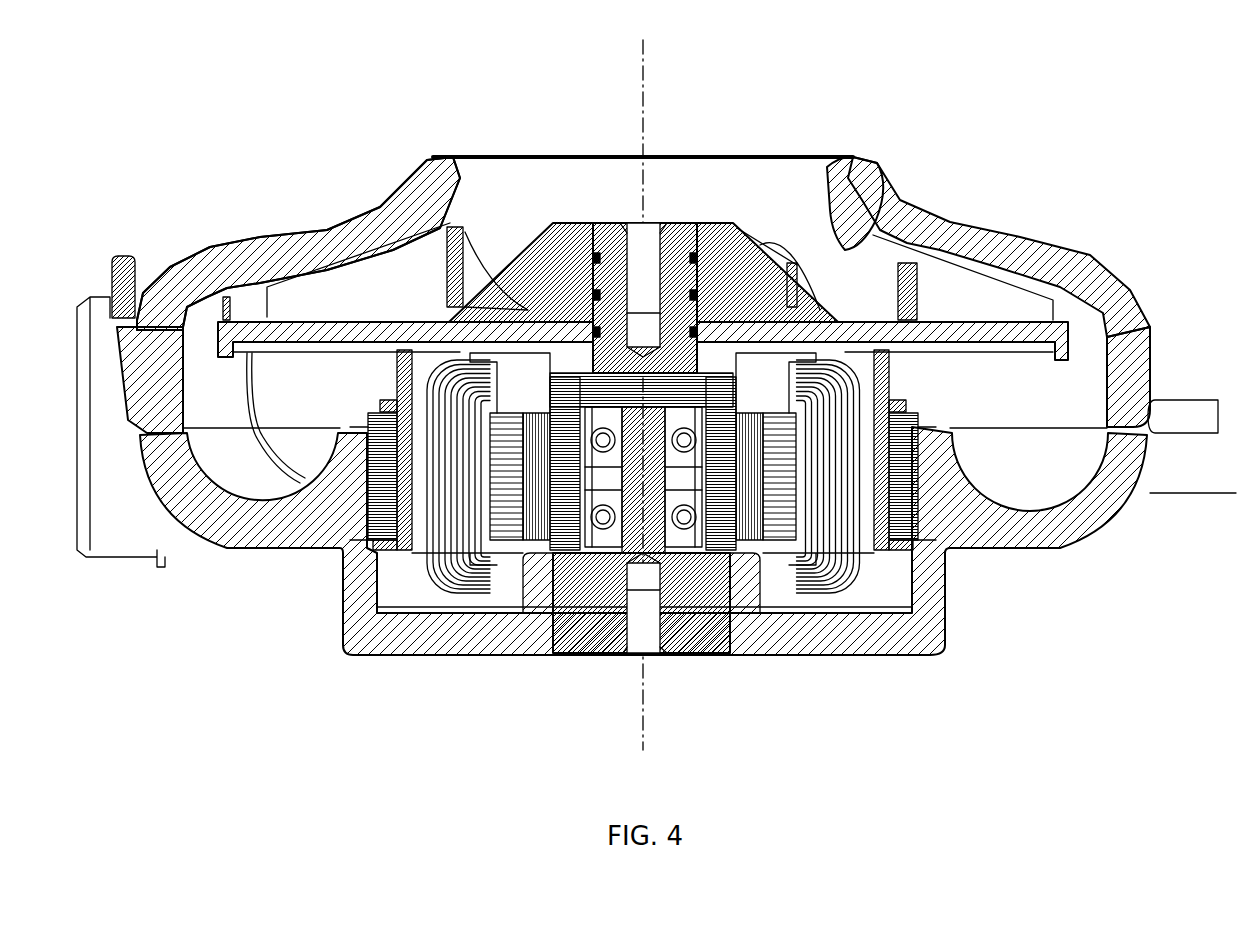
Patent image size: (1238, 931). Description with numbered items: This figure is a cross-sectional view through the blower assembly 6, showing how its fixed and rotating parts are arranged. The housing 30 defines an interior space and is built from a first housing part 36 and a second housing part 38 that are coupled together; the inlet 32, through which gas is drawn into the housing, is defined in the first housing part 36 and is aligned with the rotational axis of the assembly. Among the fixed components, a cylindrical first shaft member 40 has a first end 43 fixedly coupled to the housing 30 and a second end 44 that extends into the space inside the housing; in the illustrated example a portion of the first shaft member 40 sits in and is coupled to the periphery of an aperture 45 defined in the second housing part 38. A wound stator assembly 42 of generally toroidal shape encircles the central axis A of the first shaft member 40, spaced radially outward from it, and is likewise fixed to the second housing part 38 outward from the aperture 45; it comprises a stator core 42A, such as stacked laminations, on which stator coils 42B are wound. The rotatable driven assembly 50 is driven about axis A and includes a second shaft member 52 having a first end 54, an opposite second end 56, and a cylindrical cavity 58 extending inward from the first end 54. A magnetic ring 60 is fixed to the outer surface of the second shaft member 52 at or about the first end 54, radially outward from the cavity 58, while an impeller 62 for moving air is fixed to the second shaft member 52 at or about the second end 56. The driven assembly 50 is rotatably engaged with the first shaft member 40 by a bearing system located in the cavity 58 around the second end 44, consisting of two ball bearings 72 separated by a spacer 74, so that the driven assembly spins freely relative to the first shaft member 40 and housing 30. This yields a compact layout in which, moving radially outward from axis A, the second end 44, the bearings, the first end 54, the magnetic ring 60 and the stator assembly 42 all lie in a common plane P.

The blower assembly 6 is at (192, 131).
The housing 30 is at (1130, 335).
The inlet 32 is at (483, 170).
The first housing part 36 is at (1065, 255).
The second housing part 38 is at (933, 605).
The first shaft member 40 is at (693, 640).
The stator assembly 42 is at (585, 534).
The stator core 42A is at (380, 505).
The stator coils 42B is at (410, 535).
The first end 43 is at (587, 640).
The second end 44 is at (633, 467).
The aperture 45 is at (725, 647).
The driven assembly 50 is at (742, 210).
The second shaft member 52 is at (607, 270).
The first end 54 is at (720, 500).
The second end 56 is at (677, 273).
The cylindrical cavity 58 is at (580, 533).
The magnetic ring 60 is at (533, 493).
The impeller 62 is at (753, 273).
The ball bearings 72 is at (583, 470).
The spacer 74 is at (690, 475).
The central axis A is at (647, 44).
The common plane P is at (1180, 495).